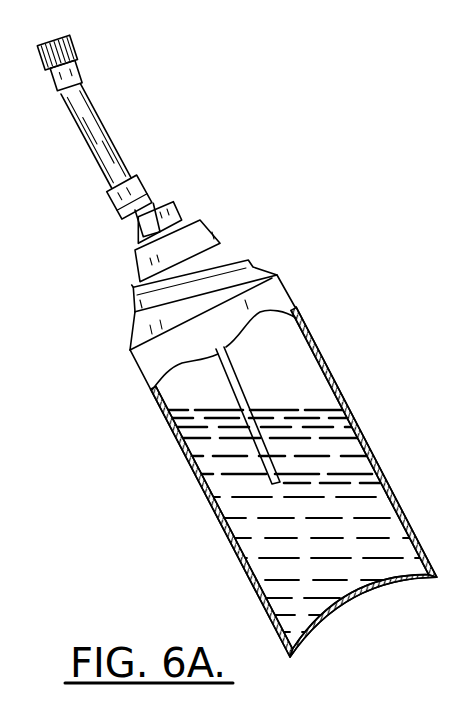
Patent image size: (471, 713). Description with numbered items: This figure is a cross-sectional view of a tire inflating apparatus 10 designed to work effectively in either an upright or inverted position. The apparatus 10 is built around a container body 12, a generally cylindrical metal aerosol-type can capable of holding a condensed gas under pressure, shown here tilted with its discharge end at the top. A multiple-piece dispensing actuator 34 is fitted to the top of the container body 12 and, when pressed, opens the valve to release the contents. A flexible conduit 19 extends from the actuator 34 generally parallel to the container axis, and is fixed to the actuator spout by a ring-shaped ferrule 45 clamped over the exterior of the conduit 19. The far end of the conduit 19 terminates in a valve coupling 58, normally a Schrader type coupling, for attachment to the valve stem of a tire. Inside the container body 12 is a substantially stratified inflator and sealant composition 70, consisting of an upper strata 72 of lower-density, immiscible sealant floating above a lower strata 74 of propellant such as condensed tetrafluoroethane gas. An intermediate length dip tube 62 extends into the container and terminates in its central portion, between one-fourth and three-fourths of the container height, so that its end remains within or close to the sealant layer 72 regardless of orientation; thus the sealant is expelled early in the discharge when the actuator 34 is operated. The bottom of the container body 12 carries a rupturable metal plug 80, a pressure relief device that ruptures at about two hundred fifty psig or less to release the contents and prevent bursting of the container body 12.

The tire inflating apparatus 10 is at (233, 336).
The container body 12 is at (176, 446).
The flexible conduit 19 is at (92, 113).
The dispensing actuator 34 is at (133, 233).
The ferrule 45 is at (140, 181).
The valve coupling 58 is at (73, 50).
The intermediate length dip tube 62 is at (290, 317).
The inflator and sealant composition 70 is at (282, 402).
The upper strata 72 is at (337, 431).
The lower strata 74 is at (258, 543).
The rupturable metal plug 80 is at (366, 604).